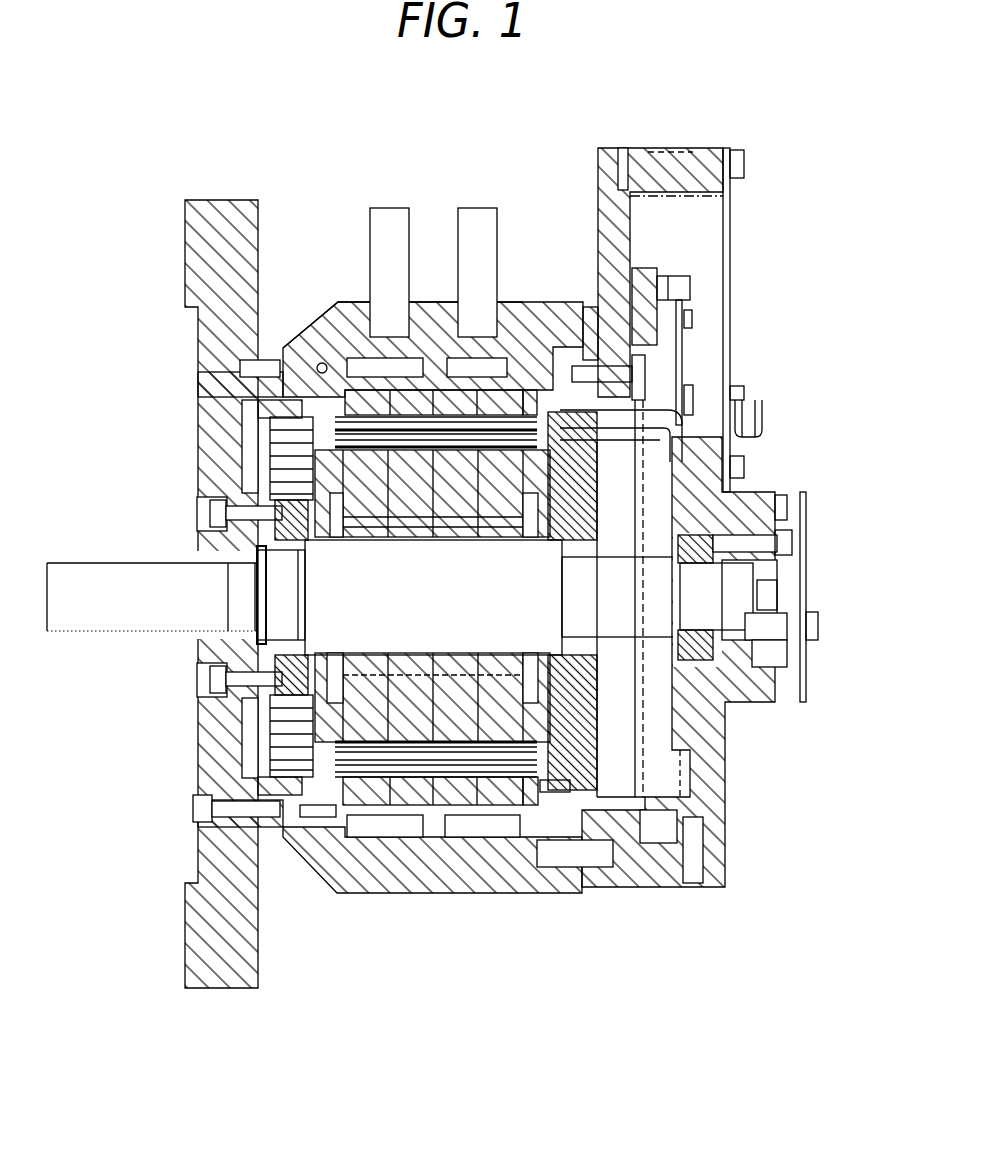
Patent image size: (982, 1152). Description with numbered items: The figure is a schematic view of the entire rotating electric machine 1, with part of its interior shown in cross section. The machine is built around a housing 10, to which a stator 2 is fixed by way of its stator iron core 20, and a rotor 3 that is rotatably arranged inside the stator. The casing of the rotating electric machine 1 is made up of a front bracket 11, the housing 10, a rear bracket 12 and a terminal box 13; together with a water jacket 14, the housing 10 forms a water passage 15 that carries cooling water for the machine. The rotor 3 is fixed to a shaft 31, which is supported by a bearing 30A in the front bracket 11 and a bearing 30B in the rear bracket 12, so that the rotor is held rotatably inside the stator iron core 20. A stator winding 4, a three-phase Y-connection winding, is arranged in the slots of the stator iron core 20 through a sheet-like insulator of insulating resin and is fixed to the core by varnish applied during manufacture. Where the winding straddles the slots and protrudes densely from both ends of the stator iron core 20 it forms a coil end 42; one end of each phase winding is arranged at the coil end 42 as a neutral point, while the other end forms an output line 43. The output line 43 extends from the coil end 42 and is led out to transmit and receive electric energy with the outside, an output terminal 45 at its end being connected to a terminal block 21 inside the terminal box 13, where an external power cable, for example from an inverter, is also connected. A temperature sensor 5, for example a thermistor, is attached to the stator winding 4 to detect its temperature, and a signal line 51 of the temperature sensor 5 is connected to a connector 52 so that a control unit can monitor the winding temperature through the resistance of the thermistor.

The rotating electric machine 1 is at (184, 240).
The stator 2 is at (456, 503).
The rotor 3 is at (264, 735).
The stator winding 4 is at (268, 430).
The temperature sensor 5 is at (690, 368).
The housing 10 is at (300, 378).
The front bracket 11 is at (208, 298).
The rear bracket 12 is at (712, 780).
The terminal box 13 is at (603, 180).
The water jacket 14 is at (342, 318).
The water passage 15 is at (466, 342).
The stator iron core 20 is at (504, 400).
The terminal block 21 is at (660, 277).
The bearing 30A is at (256, 552).
The bearing 30B is at (712, 557).
The shaft 31 is at (113, 623).
The coil end 42 is at (318, 797).
The output line 43 is at (690, 414).
The output terminal 45 is at (688, 320).
The signal line 51 is at (692, 402).
The connector 52 is at (762, 420).